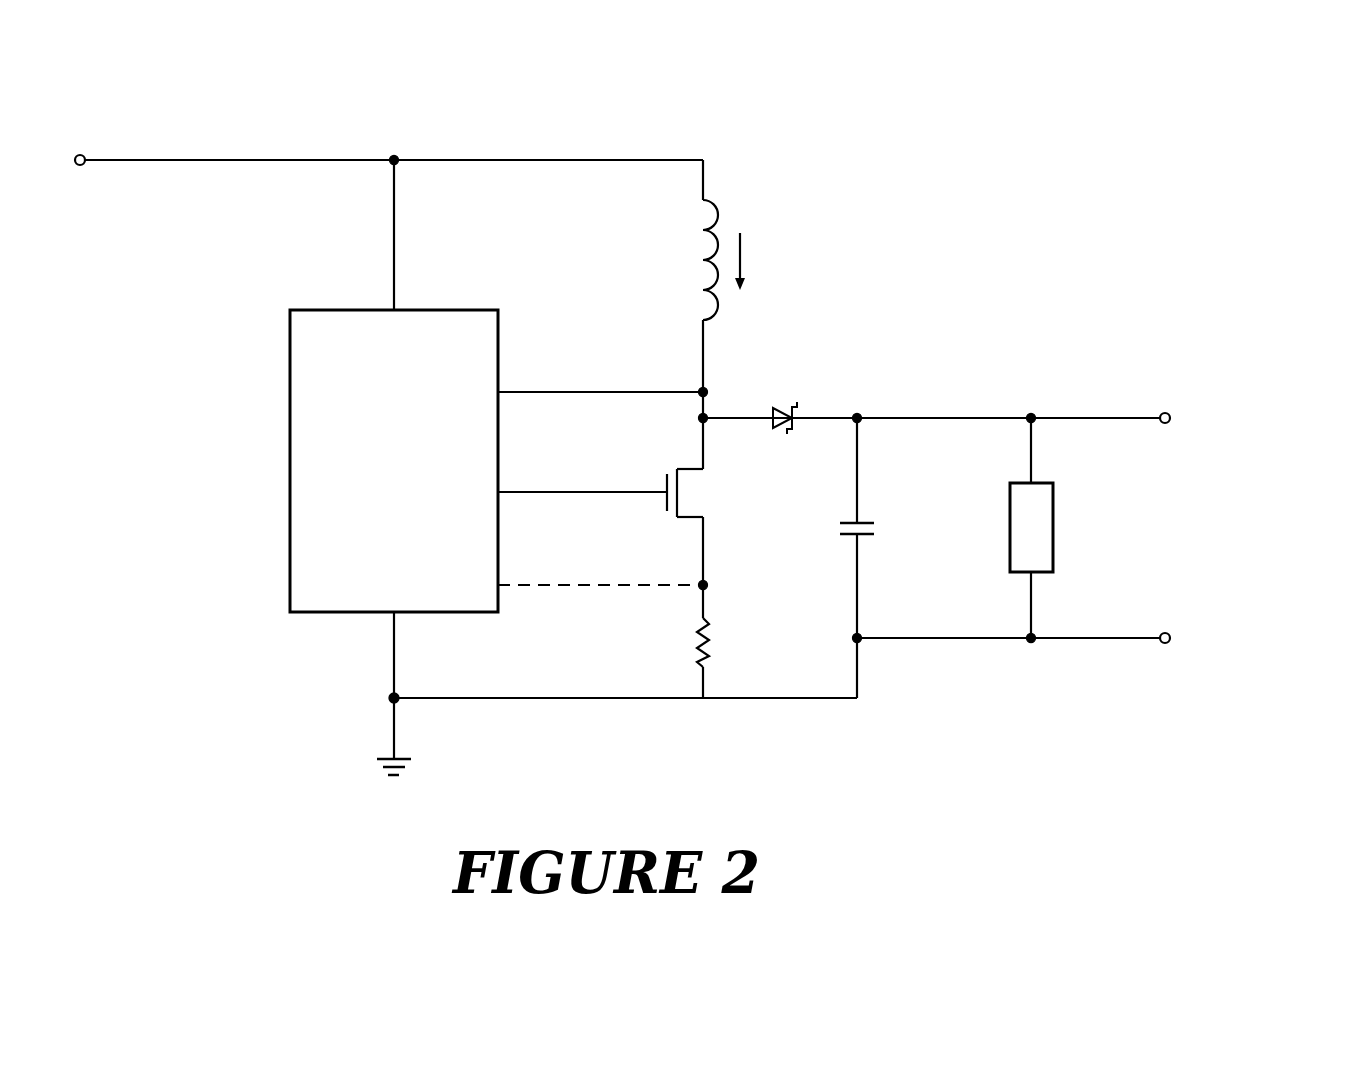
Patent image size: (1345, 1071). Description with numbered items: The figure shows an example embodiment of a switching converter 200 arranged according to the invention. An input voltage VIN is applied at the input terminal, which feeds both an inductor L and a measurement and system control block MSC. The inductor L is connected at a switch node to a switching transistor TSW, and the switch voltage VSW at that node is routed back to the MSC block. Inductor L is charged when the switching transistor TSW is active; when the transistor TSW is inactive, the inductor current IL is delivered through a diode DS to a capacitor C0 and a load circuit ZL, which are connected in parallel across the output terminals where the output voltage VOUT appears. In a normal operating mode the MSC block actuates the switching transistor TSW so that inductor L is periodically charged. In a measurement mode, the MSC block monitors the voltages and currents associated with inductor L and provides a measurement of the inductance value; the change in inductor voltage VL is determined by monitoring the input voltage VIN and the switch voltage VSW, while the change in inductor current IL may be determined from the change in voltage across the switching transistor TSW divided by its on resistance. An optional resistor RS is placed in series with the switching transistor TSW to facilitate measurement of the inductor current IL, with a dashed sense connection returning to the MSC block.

The switching converter 200 is at (659, 403).
The input voltage VIN is at (204, 159).
The measurement and system control block MSC is at (394, 461).
The inductor L is at (695, 276).
The inductor current IL is at (758, 261).
The inductor voltage VL is at (856, 261).
The switch voltage VSW is at (603, 366).
The switching transistor TSW is at (631, 527).
The diode DS is at (780, 398).
The resistor RS is at (725, 641).
The capacitor C0 is at (880, 558).
The load circuit ZL is at (1055, 528).
The output voltage VOUT is at (1080, 528).